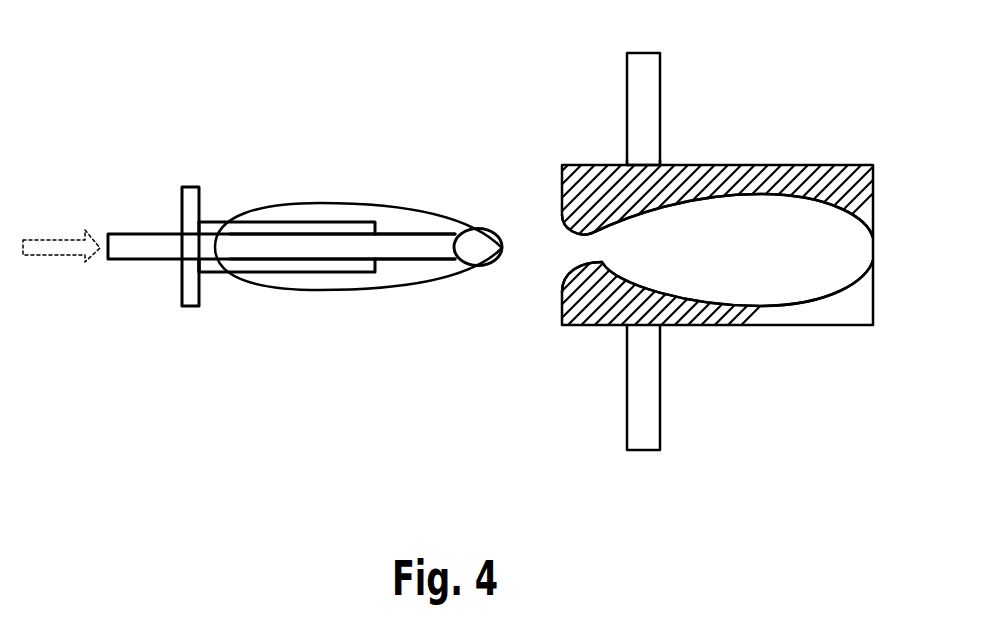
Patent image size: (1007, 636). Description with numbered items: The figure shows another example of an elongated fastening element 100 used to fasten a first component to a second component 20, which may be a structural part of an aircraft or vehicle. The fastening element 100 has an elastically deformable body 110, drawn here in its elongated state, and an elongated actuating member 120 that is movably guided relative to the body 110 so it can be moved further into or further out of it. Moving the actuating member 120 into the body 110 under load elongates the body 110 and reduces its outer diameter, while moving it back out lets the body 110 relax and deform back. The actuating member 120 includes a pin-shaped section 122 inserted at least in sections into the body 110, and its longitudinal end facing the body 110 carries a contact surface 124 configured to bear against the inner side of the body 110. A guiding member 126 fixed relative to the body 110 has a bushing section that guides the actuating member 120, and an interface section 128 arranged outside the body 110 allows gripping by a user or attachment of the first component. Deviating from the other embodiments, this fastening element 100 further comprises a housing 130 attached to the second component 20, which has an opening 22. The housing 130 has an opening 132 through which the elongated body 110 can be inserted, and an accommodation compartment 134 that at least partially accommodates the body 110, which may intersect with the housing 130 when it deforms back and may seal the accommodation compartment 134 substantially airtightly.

The second component 20 is at (637, 85).
The opening 22 is at (637, 167).
The fastening element 100 is at (173, 171).
The body 110 is at (338, 192).
The actuating member 120 is at (157, 249).
The pin-shaped section 122 is at (343, 249).
The contact surface 124 is at (478, 252).
The guiding member 126 is at (263, 268).
The interface section 128 is at (188, 308).
The housing 130 is at (723, 138).
The opening 132 is at (590, 250).
The accommodation compartment 134 is at (802, 278).